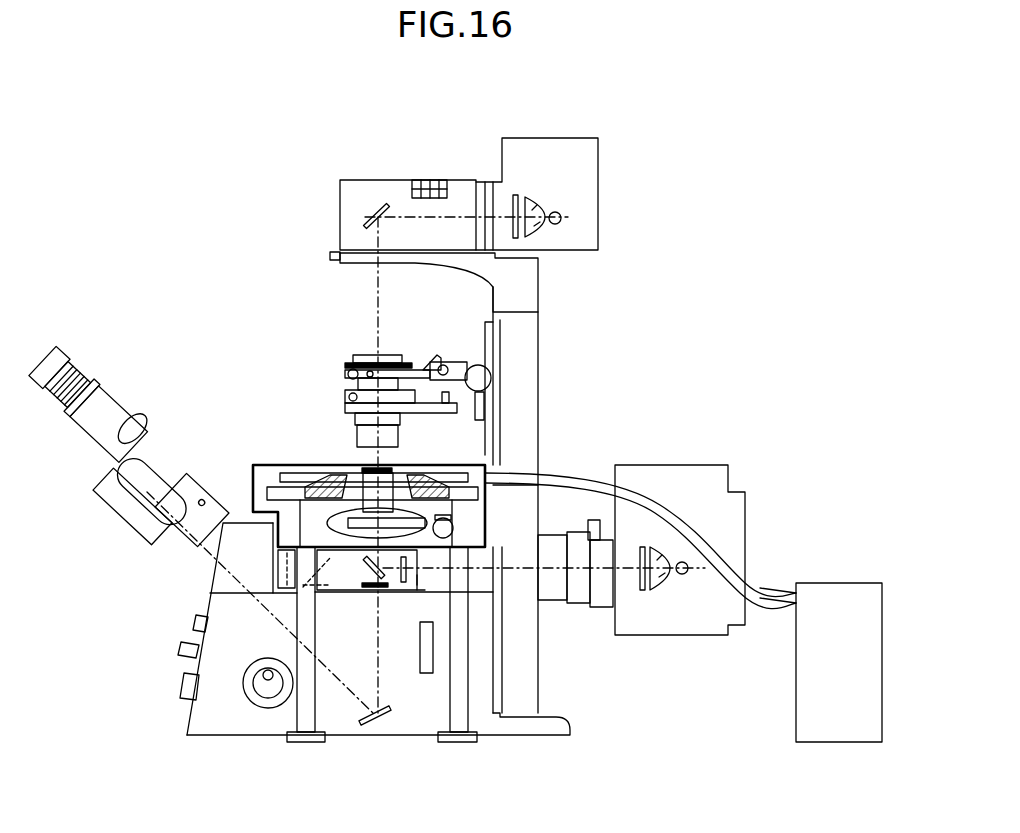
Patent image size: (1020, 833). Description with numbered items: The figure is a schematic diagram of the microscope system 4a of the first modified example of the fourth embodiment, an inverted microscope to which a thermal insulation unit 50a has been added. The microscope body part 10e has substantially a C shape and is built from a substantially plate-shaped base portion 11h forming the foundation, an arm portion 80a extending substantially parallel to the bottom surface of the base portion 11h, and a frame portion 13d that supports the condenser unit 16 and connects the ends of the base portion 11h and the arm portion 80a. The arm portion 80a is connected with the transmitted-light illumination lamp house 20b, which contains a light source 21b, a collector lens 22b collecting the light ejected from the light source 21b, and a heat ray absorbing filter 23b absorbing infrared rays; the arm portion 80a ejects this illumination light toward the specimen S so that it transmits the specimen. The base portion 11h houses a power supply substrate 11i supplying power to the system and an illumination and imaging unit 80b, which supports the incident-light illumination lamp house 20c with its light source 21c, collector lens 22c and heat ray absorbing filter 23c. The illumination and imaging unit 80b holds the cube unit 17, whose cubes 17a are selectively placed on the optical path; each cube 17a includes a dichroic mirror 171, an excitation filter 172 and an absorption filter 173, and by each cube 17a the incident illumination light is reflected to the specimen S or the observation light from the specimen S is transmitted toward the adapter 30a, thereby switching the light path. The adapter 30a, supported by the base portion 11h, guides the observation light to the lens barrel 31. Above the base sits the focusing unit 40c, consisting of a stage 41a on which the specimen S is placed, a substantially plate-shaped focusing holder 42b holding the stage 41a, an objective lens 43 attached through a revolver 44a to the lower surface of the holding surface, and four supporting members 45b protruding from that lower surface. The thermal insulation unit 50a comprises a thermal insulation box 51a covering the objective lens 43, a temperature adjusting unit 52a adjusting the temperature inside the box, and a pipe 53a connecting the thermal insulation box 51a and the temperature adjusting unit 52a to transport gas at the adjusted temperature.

The microscope system 4a is at (491, 164).
The arm portion 80a is at (393, 185).
The transmitted-light illumination lamp house 20b is at (567, 193).
The heat ray absorbing filter 23b is at (525, 200).
The light source 21b is at (562, 214).
The collector lens 22b is at (547, 230).
The microscope body part 10e is at (382, 511).
The frame portion 13d is at (540, 368).
The condenser unit 16 is at (334, 373).
The lens barrel 31 is at (118, 408).
The adapter 30a is at (127, 468).
The focusing holder 42b is at (270, 490).
The focusing unit 40c is at (344, 469).
The stage 41a is at (312, 472).
The thermal insulation box 51a is at (332, 460).
The specimen S is at (372, 467).
The objective lens 43 is at (410, 517).
The revolver 44a is at (470, 478).
The cube 17a is at (262, 512).
The cube unit 17 is at (361, 569).
The dichroic mirror 171 is at (352, 592).
The absorption filter 173 is at (385, 595).
The excitation filter 172 is at (420, 580).
The base portion 11h is at (203, 710).
The supporting member 45b is at (297, 712).
The power supply substrate 11i is at (427, 668).
The illumination and imaging unit 80b is at (440, 572).
The incident-light illumination lamp house 20c is at (711, 581).
The heat ray absorbing filter 23c is at (660, 595).
The light source 21c is at (684, 580).
The collector lens 22c is at (668, 600).
The thermal insulation unit 50a is at (817, 625).
The temperature adjusting unit 52a is at (813, 590).
The pipe 53a is at (765, 601).